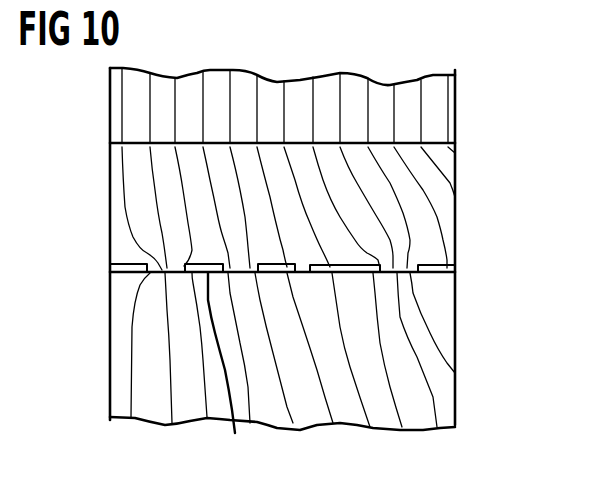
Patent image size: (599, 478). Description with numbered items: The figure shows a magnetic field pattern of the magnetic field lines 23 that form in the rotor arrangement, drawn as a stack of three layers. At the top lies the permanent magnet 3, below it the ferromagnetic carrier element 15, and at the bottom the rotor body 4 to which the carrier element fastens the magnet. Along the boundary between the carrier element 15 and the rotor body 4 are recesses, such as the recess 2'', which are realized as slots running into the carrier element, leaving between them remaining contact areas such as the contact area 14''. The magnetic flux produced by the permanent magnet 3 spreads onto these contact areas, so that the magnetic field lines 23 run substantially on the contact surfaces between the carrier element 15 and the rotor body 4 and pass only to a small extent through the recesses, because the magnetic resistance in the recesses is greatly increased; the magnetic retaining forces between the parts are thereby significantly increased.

The permanent magnet 3 is at (440, 107).
The carrier element 15 is at (440, 215).
The rotor body 4 is at (440, 377).
The contact area 14'' is at (249, 246).
The magnetic field lines 23 is at (130, 325).
The recess 2'' is at (225, 373).